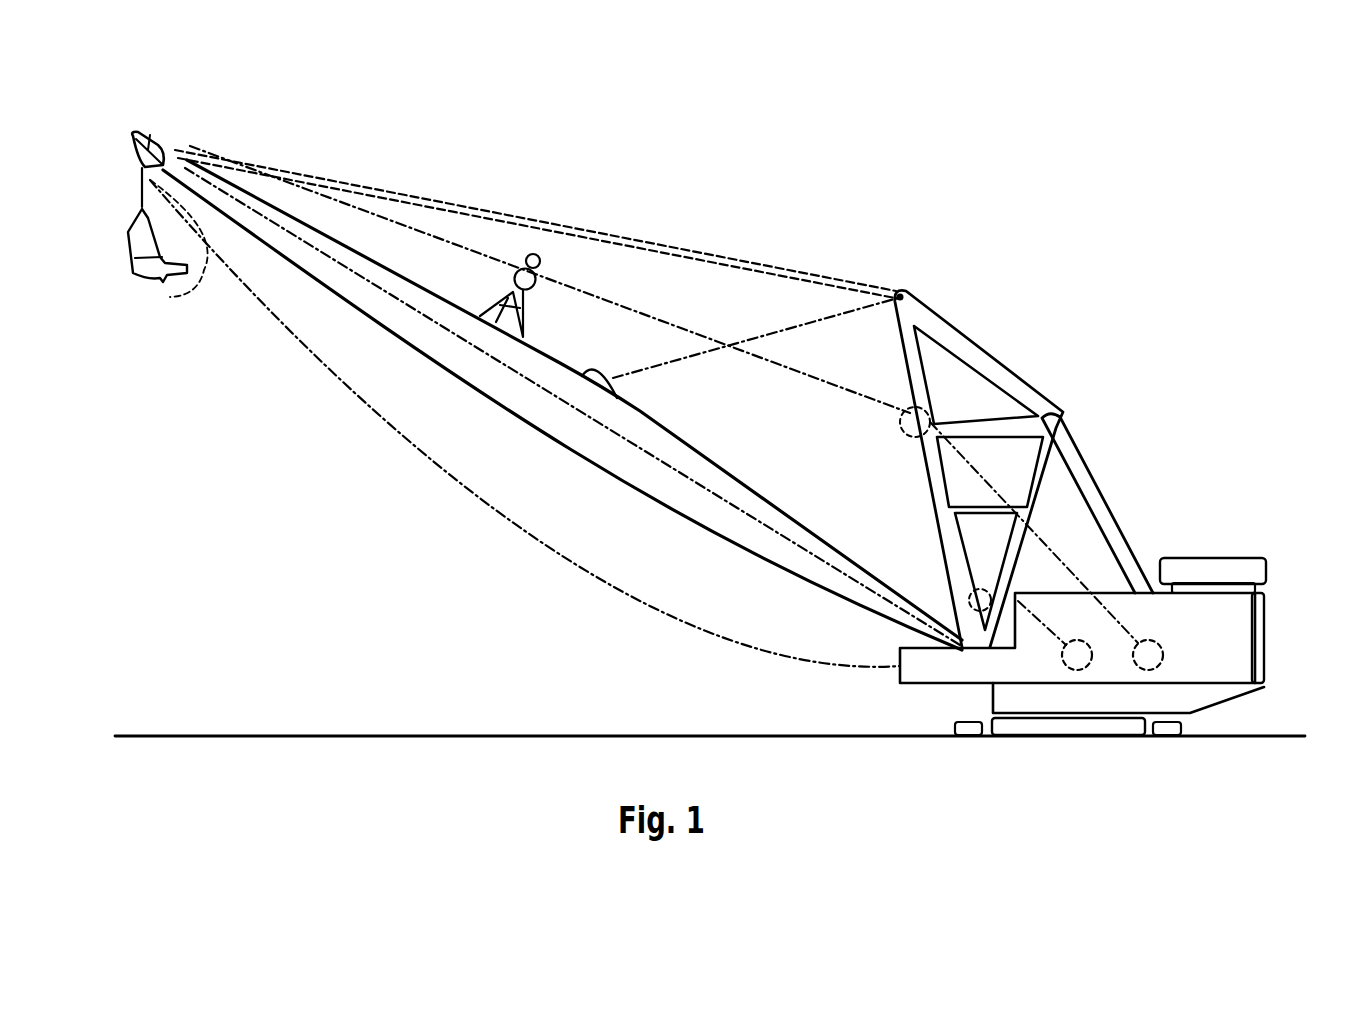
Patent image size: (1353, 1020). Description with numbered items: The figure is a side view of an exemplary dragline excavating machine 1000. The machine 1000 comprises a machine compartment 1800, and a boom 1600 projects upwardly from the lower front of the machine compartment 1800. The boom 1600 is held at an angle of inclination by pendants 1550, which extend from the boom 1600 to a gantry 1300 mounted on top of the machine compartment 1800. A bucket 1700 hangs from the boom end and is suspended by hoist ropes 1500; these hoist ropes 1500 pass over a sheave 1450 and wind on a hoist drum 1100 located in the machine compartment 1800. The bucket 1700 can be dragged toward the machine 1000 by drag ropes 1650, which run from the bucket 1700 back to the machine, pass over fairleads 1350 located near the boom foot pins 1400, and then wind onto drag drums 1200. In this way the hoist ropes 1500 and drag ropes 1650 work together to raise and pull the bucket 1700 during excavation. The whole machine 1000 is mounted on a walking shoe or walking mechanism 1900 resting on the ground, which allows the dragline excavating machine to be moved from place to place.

The machine 1000 is at (897, 183).
The hoist drum 1100 is at (1164, 660).
The drag drums 1200 is at (1050, 636).
The gantry 1300 is at (1118, 520).
The fairleads 1350 is at (981, 589).
The boom foot pins 1400 is at (931, 628).
The sheave 1450 is at (934, 422).
The hoist ropes 1500 is at (905, 407).
The pendants 1550 is at (546, 224).
The boom 1600 is at (606, 475).
The drag ropes 1650 is at (480, 503).
The bucket 1700 is at (128, 240).
The machine compartment 1800 is at (1111, 646).
The walking mechanism 1900 is at (1025, 740).